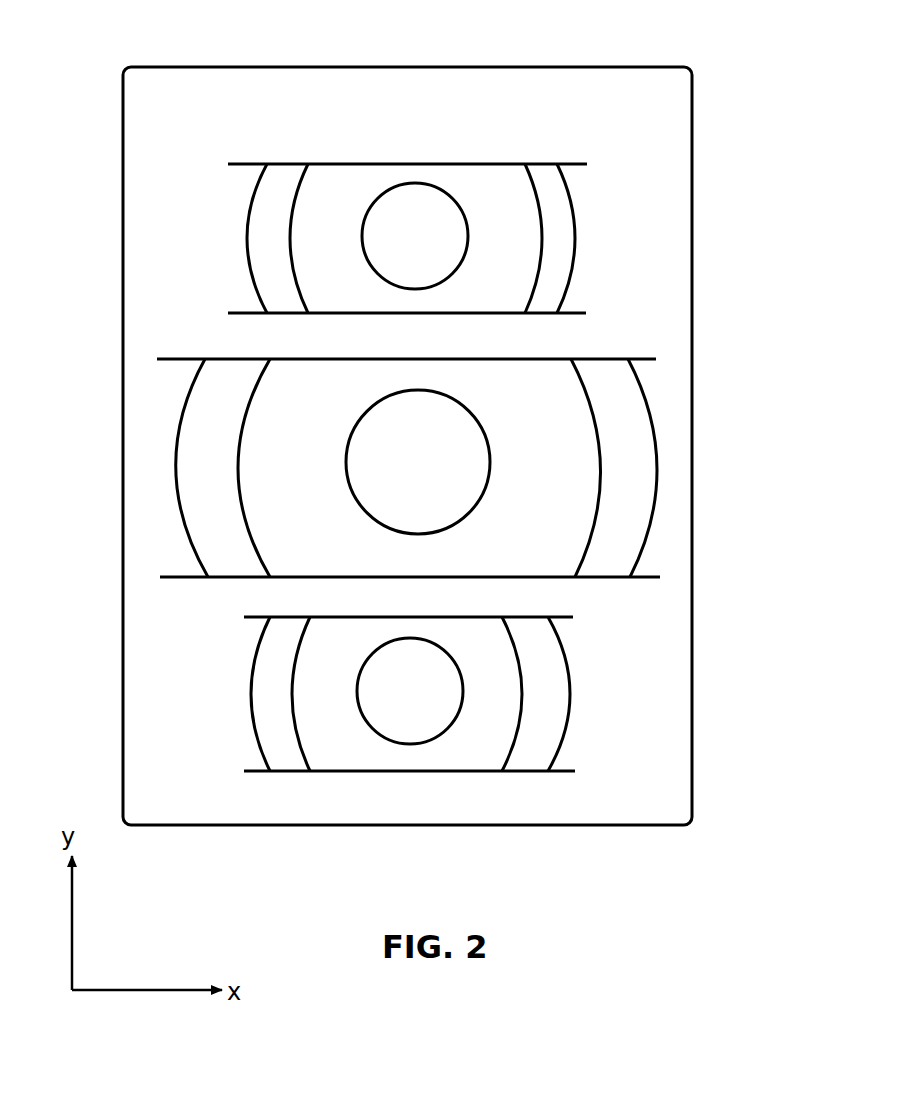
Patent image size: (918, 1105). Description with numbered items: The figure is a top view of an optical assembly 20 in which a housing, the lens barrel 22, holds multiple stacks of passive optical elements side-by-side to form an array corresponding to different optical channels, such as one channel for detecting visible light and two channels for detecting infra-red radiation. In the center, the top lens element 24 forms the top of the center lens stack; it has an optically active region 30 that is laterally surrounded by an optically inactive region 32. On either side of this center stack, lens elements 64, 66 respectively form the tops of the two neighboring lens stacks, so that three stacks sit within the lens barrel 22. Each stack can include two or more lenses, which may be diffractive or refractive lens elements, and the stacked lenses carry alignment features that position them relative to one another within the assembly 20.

The optical assembly 20 is at (752, 102).
The lens barrel 22 is at (148, 99).
The top lens element 24 is at (516, 436).
The optically active region 30 is at (418, 462).
The optically inactive region 32 is at (565, 528).
The lens element 64 is at (477, 177).
The lens element 66 is at (473, 702).